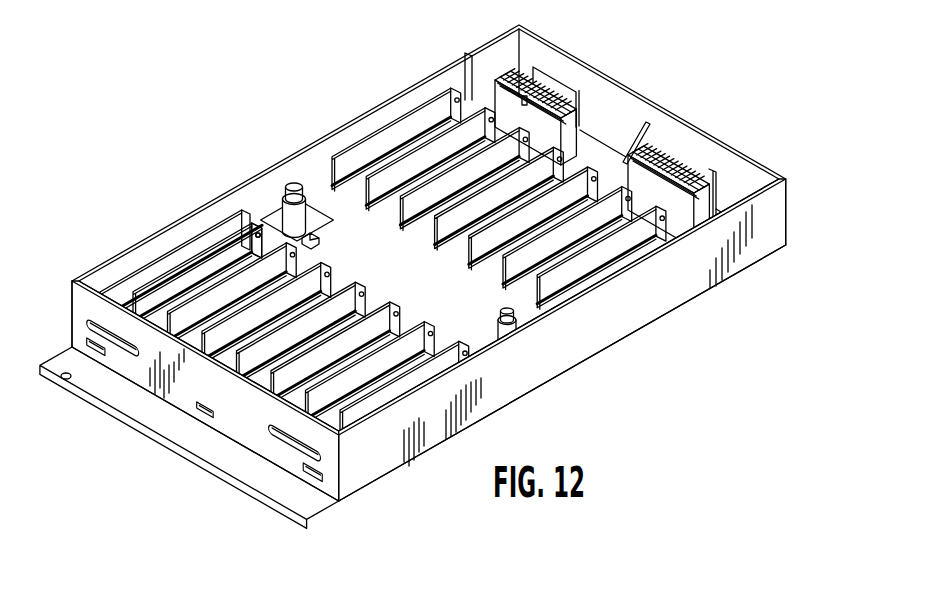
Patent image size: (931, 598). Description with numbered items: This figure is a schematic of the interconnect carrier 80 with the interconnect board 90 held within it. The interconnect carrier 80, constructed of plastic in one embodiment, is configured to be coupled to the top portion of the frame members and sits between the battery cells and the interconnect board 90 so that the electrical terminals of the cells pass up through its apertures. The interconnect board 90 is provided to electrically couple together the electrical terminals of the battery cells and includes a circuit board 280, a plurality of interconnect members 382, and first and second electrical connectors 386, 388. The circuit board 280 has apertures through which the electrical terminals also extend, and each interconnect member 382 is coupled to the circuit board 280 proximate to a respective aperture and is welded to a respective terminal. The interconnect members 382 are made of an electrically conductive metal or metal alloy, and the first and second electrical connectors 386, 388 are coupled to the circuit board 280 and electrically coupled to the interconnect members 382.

The interconnect carrier 80 is at (777, 220).
The interconnect members 382 is at (383, 185).
The first electrical connector 386 is at (689, 164).
The second electrical connector 388 is at (545, 80).
The interconnect board 90 is at (598, 162).
The circuit board 280 is at (468, 307).